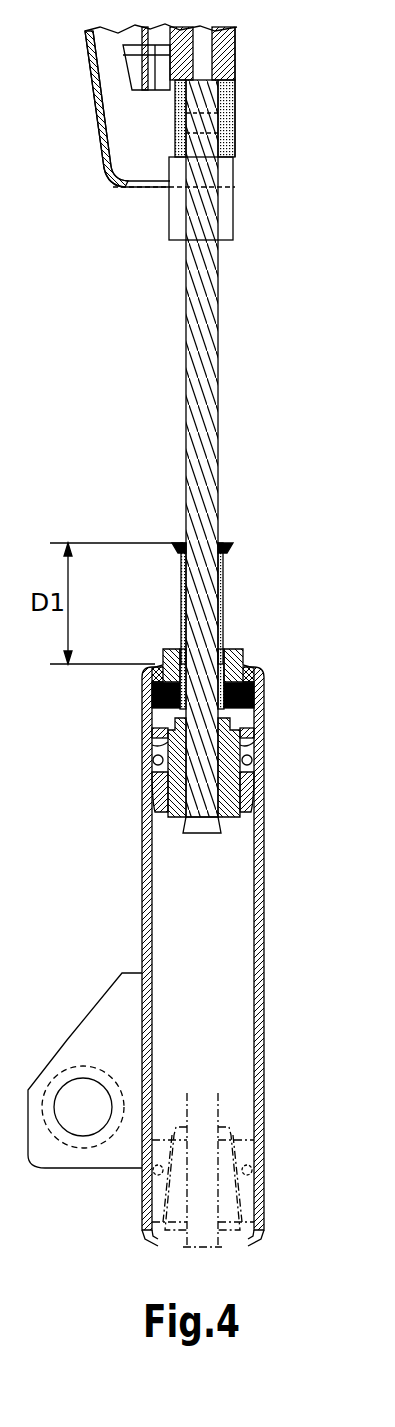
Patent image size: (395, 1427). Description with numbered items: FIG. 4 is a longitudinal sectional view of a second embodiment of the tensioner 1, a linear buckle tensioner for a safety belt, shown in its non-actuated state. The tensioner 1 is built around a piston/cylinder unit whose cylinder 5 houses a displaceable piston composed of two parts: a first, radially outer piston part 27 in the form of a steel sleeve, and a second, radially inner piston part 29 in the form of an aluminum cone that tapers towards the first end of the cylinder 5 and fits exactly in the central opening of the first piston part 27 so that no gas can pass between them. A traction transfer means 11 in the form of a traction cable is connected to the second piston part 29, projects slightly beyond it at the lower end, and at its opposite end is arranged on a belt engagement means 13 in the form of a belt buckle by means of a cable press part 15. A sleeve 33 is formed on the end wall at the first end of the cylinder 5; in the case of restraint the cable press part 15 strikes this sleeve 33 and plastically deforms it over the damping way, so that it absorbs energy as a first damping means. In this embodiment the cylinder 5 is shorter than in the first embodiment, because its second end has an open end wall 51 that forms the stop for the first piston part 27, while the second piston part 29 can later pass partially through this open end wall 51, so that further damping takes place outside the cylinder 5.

The tensioner 1 is at (282, 928).
The cylinder 5 is at (258, 1003).
The traction transfer means 11 is at (205, 338).
The belt engagement means 13 is at (225, 62).
The cable press part 15 is at (225, 217).
The first piston part 27 is at (157, 807).
The second piston part 29 is at (238, 802).
The sleeve 33 is at (222, 575).
The open end wall 51 is at (158, 1245).